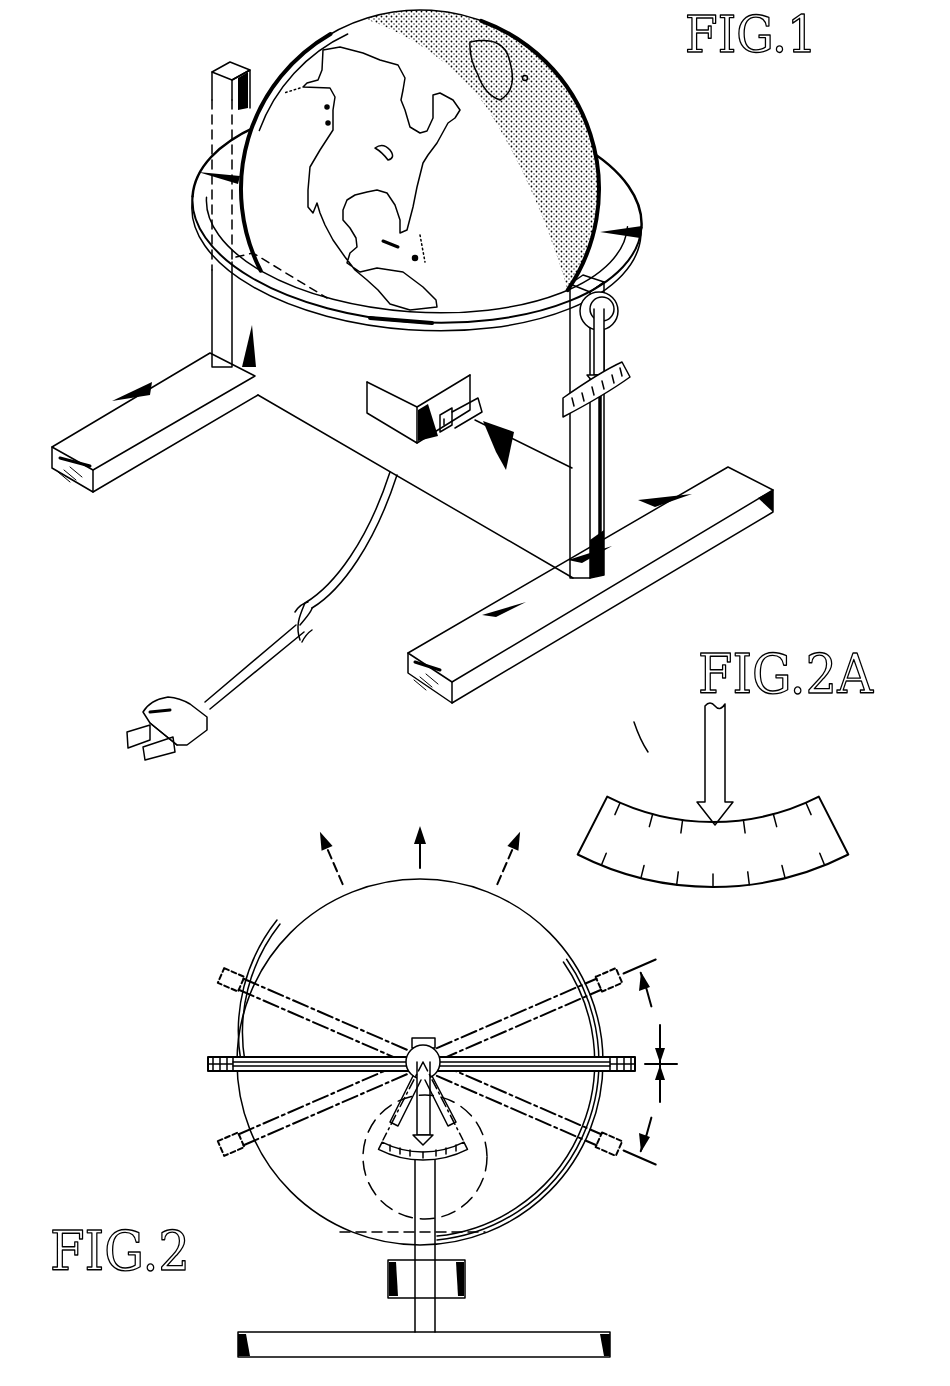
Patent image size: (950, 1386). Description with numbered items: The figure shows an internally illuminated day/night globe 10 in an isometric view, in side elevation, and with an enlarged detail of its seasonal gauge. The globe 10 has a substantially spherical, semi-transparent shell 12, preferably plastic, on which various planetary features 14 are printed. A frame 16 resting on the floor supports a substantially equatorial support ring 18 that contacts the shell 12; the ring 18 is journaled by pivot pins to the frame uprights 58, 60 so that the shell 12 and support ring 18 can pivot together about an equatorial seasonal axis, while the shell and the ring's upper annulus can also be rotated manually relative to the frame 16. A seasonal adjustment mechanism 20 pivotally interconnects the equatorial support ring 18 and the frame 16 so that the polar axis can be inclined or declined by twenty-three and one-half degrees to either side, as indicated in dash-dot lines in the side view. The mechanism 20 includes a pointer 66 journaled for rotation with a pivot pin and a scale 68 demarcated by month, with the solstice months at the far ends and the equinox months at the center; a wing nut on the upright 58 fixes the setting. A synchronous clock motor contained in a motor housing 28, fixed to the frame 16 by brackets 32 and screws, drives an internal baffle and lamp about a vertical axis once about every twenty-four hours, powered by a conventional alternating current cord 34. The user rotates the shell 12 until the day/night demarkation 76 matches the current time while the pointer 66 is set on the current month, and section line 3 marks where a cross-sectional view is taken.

In FIG. 1, the globe apparatus 10 is at (262, 482).
In FIG. 1, the globe 12 is at (547, 67).
In FIG. 2, the globe 12 is at (547, 927).
In FIG. 1, the continents 14 is at (371, 141).
In FIG. 2, the base 16 is at (413, 1307).
In FIG. 1, the ring 18 is at (643, 213).
In FIG. 2, the ring 18 is at (210, 1058).
In FIG. 1, the indicator assembly 20 is at (638, 318).
In FIG. 2, the indicator assembly 20 is at (466, 1166).
In FIG. 2A, the indicator assembly 20 is at (636, 728).
In FIG. 1, the housing box 28 is at (383, 419).
In FIG. 2, the housing box 28 is at (466, 1286).
In FIG. 1, the switch 32 is at (470, 421).
In FIG. 1, the power cord 34 is at (228, 673).
In FIG. 1, the left post 58 is at (212, 285).
In FIG. 1, the right post 60 is at (607, 463).
In FIG. 2A, the pointer arrow 66 is at (718, 765).
In FIG. 2A, the month scale 68 is at (826, 816).
In FIG. 1, the shaded night region 76 is at (524, 163).
In FIG. 1, the section line 3- 3 is at (192, 81).